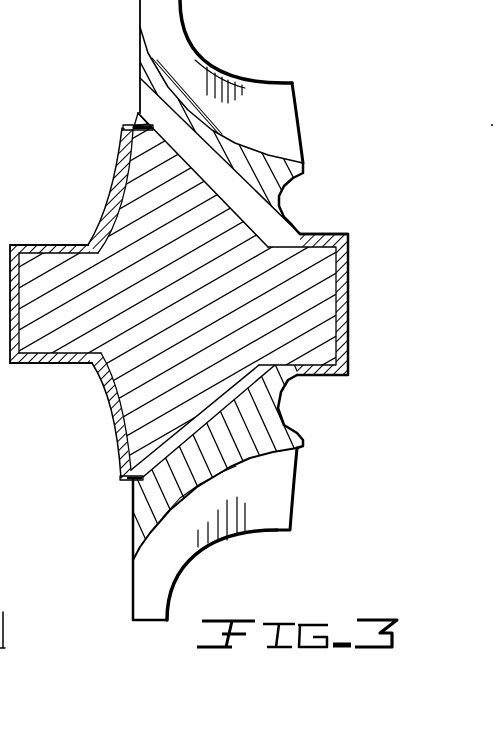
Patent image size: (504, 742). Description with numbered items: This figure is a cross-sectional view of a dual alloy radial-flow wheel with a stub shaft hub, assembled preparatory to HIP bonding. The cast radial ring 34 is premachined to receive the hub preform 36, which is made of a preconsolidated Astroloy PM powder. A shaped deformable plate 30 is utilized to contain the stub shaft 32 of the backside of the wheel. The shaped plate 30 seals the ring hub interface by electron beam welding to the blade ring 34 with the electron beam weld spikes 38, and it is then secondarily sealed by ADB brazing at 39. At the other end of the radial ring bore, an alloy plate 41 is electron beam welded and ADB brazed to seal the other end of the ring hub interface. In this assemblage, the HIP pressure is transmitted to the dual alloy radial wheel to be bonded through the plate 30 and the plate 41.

The shaped deformable plate 30 is at (39, 358).
The stub shaft 32 is at (36, 260).
The cast radial ring 34 is at (270, 442).
The hub preform 36 is at (313, 258).
The electron beam weld spikes 38 is at (122, 128).
The ADB braze 39 is at (136, 111).
The alloy plate 41 is at (341, 340).